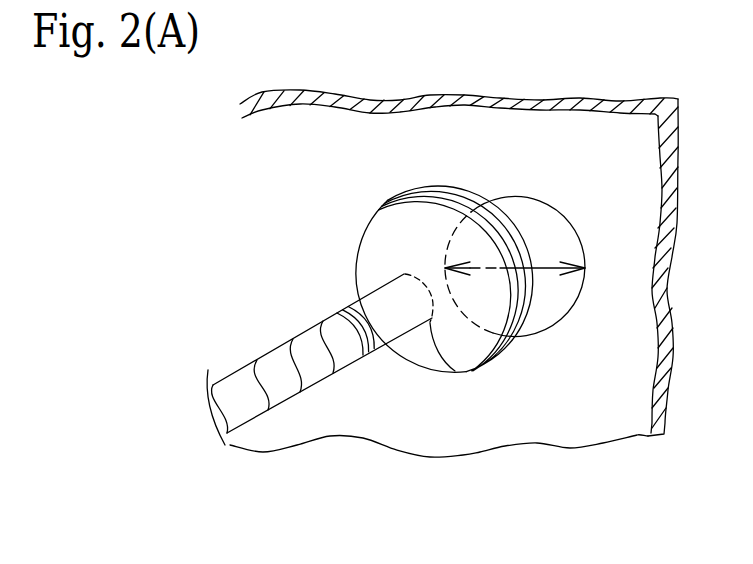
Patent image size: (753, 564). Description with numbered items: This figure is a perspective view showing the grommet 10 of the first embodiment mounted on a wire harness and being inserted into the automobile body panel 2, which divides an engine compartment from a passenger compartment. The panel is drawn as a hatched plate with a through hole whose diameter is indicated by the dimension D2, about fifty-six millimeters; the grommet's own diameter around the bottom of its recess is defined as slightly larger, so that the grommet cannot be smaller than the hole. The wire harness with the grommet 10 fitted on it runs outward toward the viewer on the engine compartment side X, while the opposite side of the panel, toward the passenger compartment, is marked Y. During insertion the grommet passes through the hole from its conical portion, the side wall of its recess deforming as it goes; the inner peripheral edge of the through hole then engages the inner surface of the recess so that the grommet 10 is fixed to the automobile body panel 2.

The automobile body panel 2 is at (523, 139).
The grommet 10 is at (453, 372).
The diameter of the through hole D2 is at (540, 273).
The engine compartment side X is at (216, 300).
The Y side (inside of panel) Y is at (588, 159).